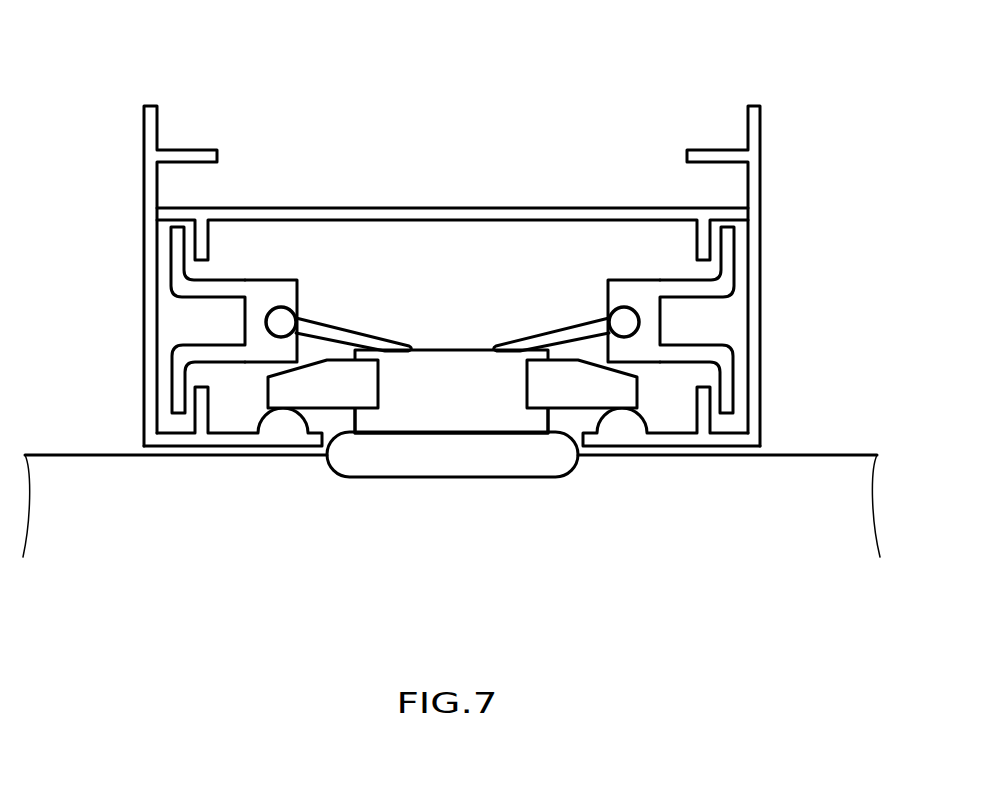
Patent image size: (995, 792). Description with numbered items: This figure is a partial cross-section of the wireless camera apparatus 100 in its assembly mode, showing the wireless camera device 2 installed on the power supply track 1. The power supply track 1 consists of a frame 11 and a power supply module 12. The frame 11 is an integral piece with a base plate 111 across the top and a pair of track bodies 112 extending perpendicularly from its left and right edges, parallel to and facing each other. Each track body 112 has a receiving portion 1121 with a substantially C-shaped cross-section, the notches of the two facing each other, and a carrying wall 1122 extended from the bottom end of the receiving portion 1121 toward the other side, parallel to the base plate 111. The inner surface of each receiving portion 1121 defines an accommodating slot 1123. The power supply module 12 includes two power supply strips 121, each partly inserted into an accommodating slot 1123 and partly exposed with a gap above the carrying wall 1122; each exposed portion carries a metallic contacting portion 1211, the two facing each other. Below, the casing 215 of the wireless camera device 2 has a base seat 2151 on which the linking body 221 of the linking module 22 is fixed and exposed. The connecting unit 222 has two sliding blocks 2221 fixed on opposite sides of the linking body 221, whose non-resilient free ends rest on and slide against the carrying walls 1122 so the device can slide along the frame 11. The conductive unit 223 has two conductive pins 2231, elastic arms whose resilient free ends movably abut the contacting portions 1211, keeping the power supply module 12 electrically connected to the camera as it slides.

The wireless camera apparatus 100 is at (58, 34).
The power supply track 1 is at (120, 283).
The frame 11 is at (240, 137).
The base plate 111 is at (342, 213).
The track body 112 is at (173, 214).
The receiving portion 1121 is at (757, 398).
The carrying wall 1122 is at (672, 438).
The accommodating slot 1123 is at (732, 314).
The power supply module 12 is at (593, 150).
The power supply strip 121 is at (640, 290).
The contacting portion 1211 is at (618, 317).
The wireless camera device 2 is at (74, 442).
The casing 215 is at (790, 392).
The base seat 2151 is at (827, 470).
The linking module 22 is at (478, 585).
The linking body 221 is at (424, 412).
The connecting unit 222 is at (340, 540).
The sliding block 2221 is at (327, 395).
The conductive unit 223 is at (253, 540).
The conductive pin 2231 is at (316, 328).